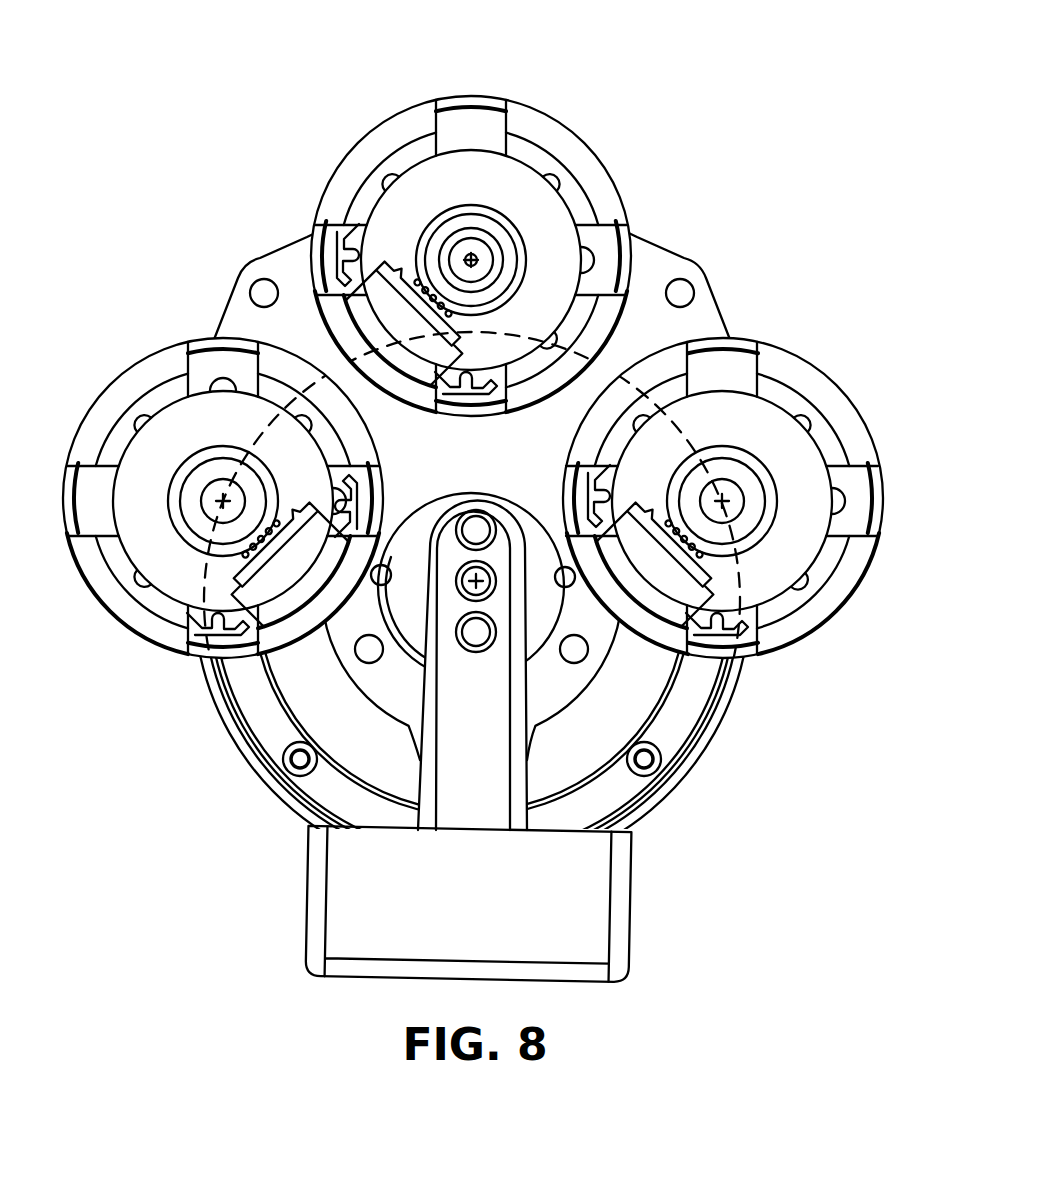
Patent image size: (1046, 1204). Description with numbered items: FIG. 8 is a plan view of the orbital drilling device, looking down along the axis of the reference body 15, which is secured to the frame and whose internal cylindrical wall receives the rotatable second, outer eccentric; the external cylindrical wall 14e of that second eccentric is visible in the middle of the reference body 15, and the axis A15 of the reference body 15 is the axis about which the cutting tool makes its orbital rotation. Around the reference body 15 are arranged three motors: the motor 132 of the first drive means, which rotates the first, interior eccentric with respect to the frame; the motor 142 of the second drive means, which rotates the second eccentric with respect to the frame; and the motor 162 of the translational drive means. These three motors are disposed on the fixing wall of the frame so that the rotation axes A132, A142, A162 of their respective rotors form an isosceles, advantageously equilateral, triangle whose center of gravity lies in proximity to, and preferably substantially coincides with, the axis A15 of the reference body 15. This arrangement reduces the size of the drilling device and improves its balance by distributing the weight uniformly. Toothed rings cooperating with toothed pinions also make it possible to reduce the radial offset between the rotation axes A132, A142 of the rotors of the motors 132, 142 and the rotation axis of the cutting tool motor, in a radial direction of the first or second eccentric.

The reference body 15 is at (717, 780).
The axis of the reference body A15 is at (469, 566).
The motor of the translational drive means 162 is at (549, 67).
The rotation axis of the rotor of motor 162 A162 is at (463, 246).
The motor of the second drive means 142 is at (112, 348).
The rotation axis of the rotor of motor 142 A142 is at (216, 486).
The motor of the first drive means 132 is at (882, 384).
The rotation axis of the rotor of motor 132 A132 is at (729, 485).
The external cylindrical wall of the second eccentric 14e is at (180, 589).